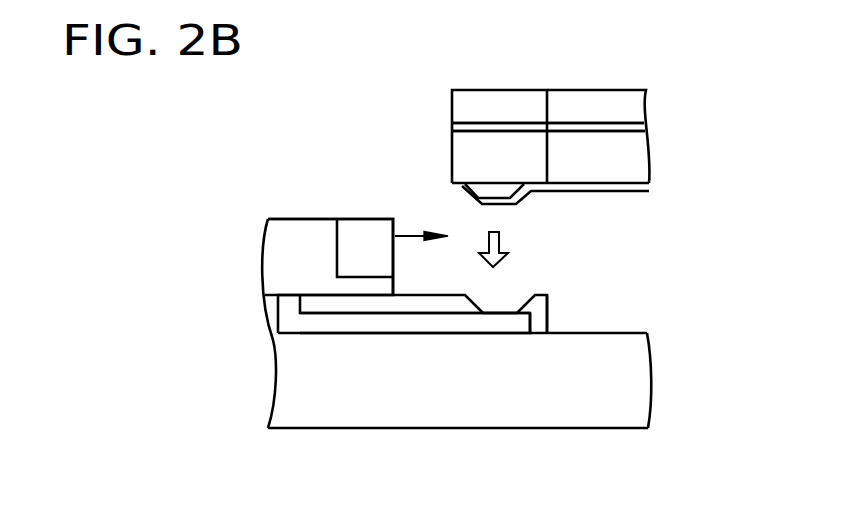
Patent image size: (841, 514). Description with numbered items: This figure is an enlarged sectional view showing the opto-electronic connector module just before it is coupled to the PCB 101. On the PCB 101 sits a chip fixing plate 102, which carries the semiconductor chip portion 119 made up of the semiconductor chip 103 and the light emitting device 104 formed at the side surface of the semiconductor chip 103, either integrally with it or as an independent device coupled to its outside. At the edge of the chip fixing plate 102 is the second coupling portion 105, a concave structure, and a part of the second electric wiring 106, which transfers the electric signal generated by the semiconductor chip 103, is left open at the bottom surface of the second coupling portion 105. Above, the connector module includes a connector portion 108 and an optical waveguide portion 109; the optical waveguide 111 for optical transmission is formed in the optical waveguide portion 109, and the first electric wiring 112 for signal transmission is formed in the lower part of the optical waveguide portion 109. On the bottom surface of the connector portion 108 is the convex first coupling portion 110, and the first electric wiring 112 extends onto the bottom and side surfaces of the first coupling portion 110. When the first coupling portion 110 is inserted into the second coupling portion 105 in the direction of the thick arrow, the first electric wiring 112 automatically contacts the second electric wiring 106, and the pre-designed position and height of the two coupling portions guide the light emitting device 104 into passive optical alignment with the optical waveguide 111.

The PCB 101 is at (370, 402).
The chip fixing plate 102 is at (535, 327).
The semiconductor chip 103 is at (295, 227).
The light emitting device 104 is at (367, 227).
The second coupling portion 105 is at (498, 305).
The second electric wiring 106 is at (422, 333).
The connector portion 108 is at (500, 97).
The optical waveguide portion 109 is at (575, 97).
The first coupling portion 110 is at (502, 192).
The optical waveguide 111 is at (623, 127).
The first electric wiring 112 is at (623, 188).
The semiconductor chip portion 119 is at (375, 142).